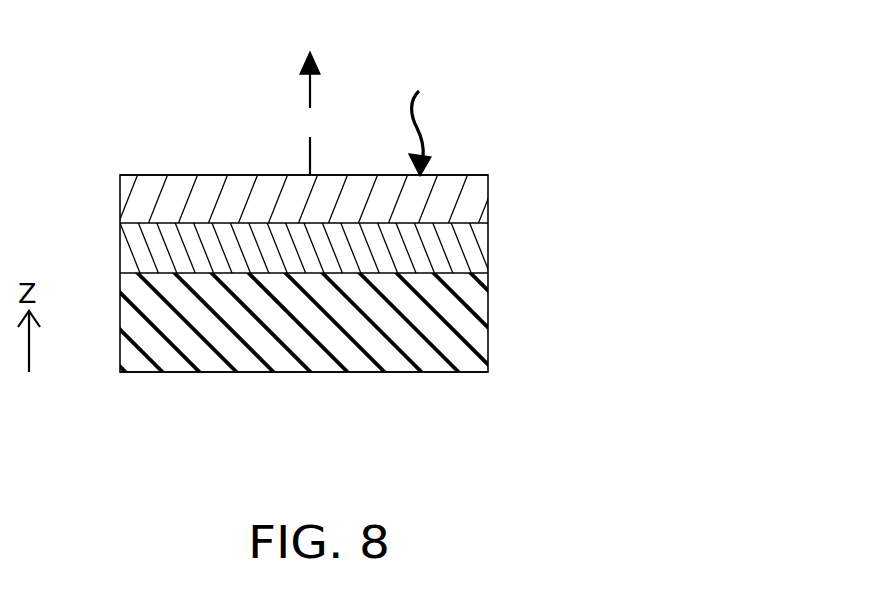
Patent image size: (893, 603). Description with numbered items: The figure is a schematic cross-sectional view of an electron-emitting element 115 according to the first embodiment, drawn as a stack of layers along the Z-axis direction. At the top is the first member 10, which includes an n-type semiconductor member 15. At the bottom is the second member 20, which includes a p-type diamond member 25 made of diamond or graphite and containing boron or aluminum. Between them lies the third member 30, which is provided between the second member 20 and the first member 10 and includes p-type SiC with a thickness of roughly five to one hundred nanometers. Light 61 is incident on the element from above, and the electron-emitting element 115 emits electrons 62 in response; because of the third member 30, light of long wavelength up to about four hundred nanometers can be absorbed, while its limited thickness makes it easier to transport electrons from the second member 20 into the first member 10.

The electron-emitting element 115 is at (527, 92).
The n-type semiconductor member 15 is at (484, 187).
The first member 10 is at (467, 211).
The third member 30 is at (467, 251).
The second member 20 is at (455, 313).
The p-type diamond member 25 is at (447, 347).
The light 61 is at (427, 101).
The electrons 62 is at (308, 88).